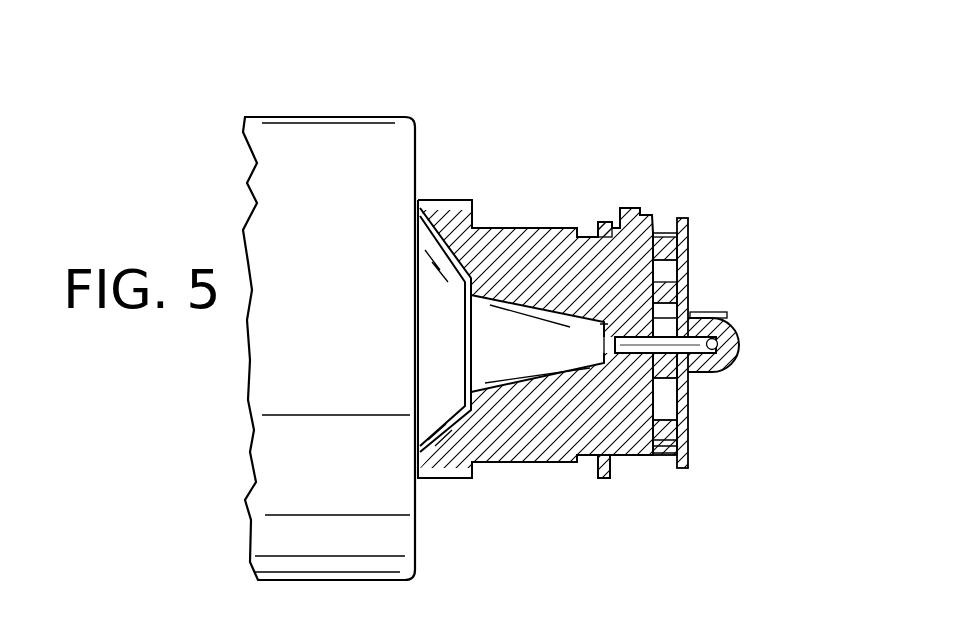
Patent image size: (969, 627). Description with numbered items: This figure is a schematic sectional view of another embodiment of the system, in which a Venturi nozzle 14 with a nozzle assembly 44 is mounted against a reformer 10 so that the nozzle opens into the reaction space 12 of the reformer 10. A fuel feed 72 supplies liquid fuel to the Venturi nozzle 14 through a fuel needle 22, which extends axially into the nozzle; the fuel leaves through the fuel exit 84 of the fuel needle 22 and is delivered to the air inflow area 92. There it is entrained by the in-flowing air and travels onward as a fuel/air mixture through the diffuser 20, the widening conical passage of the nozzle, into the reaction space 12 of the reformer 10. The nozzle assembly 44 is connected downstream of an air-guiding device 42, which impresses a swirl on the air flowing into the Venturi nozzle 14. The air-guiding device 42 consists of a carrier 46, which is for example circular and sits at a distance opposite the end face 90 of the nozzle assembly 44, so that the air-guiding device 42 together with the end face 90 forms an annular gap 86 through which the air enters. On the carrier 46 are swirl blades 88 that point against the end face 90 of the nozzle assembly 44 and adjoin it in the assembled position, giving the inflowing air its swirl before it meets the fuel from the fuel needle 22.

The reformer 10 is at (373, 116).
The reaction space 12 is at (300, 152).
The Venturi nozzle 14 is at (527, 490).
The diffuser 20 is at (533, 333).
The fuel needle 22 is at (697, 313).
The air-guiding device 42 is at (666, 472).
The nozzle assembly 44 is at (590, 417).
The carrier 46 is at (683, 412).
The fuel feed 72 is at (755, 347).
The fuel exit 84 is at (602, 332).
The annular gap 86 is at (662, 227).
The swirl blades 88 is at (673, 442).
The end face 90 is at (669, 392).
The air inflow area 92 is at (625, 323).